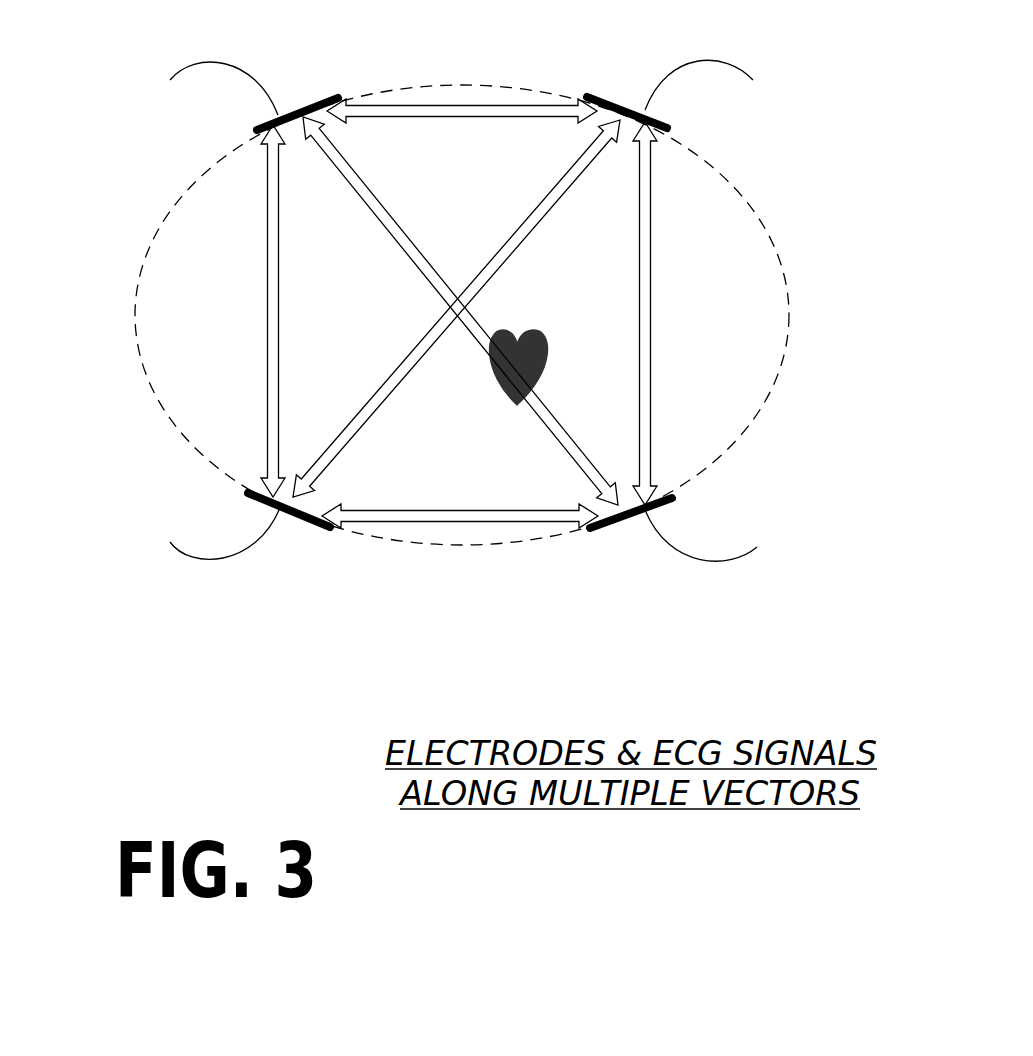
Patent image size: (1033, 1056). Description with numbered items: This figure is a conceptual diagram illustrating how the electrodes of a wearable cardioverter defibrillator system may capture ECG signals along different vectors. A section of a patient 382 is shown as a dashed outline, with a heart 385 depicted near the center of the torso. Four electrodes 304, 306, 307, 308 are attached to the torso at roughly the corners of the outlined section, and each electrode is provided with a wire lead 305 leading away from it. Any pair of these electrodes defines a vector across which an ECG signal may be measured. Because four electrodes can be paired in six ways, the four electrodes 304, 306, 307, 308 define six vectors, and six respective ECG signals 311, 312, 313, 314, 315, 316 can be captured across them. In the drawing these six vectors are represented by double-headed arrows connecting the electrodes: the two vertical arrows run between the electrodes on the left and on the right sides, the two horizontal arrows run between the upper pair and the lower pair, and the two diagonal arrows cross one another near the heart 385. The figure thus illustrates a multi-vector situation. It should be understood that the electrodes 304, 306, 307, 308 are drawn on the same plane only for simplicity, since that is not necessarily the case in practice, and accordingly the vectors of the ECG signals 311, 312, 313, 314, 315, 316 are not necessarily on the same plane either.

The electrode 304 is at (597, 94).
The wire lead 305 is at (197, 59).
The electrode 306 is at (612, 530).
The electrode 307 is at (306, 528).
The electrode 308 is at (313, 95).
The ECG signal 311 is at (268, 336).
The ECG signal 312 is at (380, 214).
The ECG signal 313 is at (453, 119).
The ECG signal 314 is at (540, 214).
The ECG signal 315 is at (648, 336).
The ECG signal 316 is at (468, 510).
The patient 382 is at (150, 232).
The heart 385 is at (546, 355).